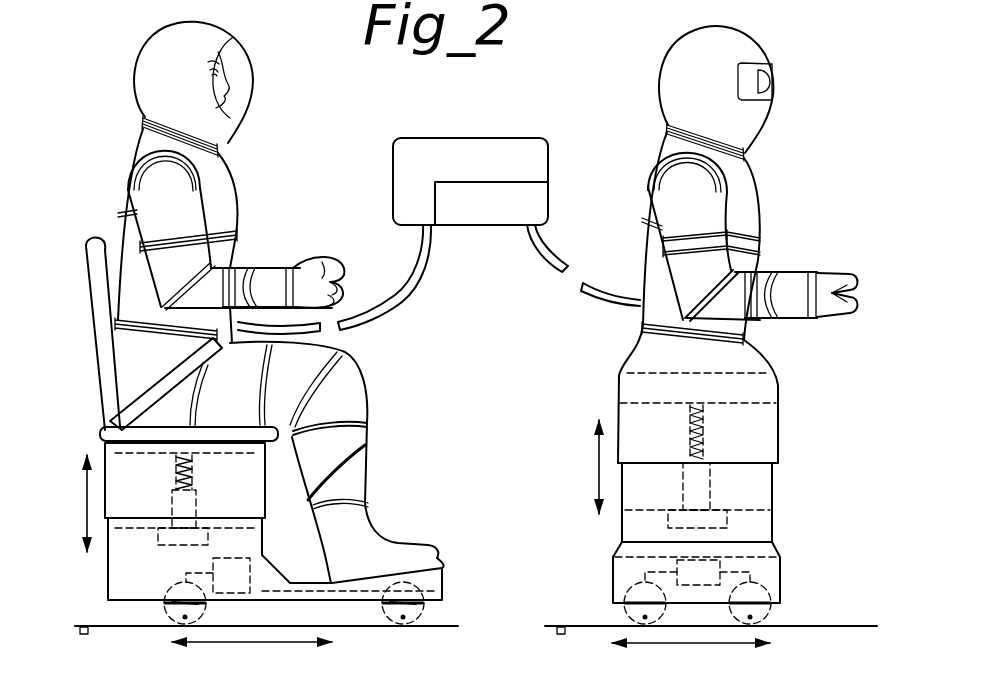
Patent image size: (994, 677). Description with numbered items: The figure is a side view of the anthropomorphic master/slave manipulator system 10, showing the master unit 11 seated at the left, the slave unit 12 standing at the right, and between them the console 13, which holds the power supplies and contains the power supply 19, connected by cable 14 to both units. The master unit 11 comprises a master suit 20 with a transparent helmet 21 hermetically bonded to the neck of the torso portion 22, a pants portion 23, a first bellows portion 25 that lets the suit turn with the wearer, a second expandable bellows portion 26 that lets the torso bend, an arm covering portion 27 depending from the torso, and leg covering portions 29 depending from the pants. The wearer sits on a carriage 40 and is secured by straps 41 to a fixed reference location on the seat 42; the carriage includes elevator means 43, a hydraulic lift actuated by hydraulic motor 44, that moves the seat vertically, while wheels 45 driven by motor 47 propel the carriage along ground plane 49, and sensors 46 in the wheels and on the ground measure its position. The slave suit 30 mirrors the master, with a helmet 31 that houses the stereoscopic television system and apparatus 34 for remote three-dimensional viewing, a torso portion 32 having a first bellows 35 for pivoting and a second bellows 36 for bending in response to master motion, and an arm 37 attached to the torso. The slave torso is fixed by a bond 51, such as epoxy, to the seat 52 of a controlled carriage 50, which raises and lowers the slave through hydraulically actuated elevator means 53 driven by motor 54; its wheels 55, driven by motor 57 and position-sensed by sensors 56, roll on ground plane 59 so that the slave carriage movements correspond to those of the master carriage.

The anthropomorphic master/slave manipulator system 10 is at (318, 98).
The master unit 11 is at (82, 128).
The slave unit 12 is at (627, 125).
The console 13 is at (481, 166).
The cable 14 is at (526, 244).
The power supply 19 is at (501, 208).
The master suit 20 is at (271, 163).
The transparent helmet 21 is at (146, 50).
The torso portion 22 is at (238, 219).
The pants portion 23 is at (365, 388).
The first bellows portion 25 is at (238, 239).
The second expandable bellows portion 26 is at (96, 243).
The arm covering portion 27 is at (145, 200).
The leg covering portions 29 is at (342, 372).
The slave suit 30 is at (776, 190).
The helmet 31 is at (680, 43).
The torso portion 32 is at (760, 248).
The stereoscopic television system and apparatus 34 is at (775, 80).
The first bellows 35 is at (760, 238).
The second bellows 36 is at (743, 340).
The arm 37 is at (673, 212).
The carriage 40 is at (118, 437).
The straps 41 is at (140, 403).
The seat 42 is at (156, 441).
The elevator means 43 is at (196, 506).
The hydraulic motor 44 is at (208, 540).
The wheels 45 is at (178, 616).
The sensors 46 is at (206, 604).
The motor 47 is at (218, 575).
The ground plane 49 is at (340, 628).
The controlled carriage 50 is at (798, 408).
The bond 51 is at (740, 368).
The seat 52 is at (630, 401).
The elevator means 53 is at (705, 425).
The motor 54 is at (727, 520).
The wheels 55 is at (635, 618).
The sensors 56 is at (735, 620).
The motor 57 is at (697, 572).
The ground plane 59 is at (845, 627).